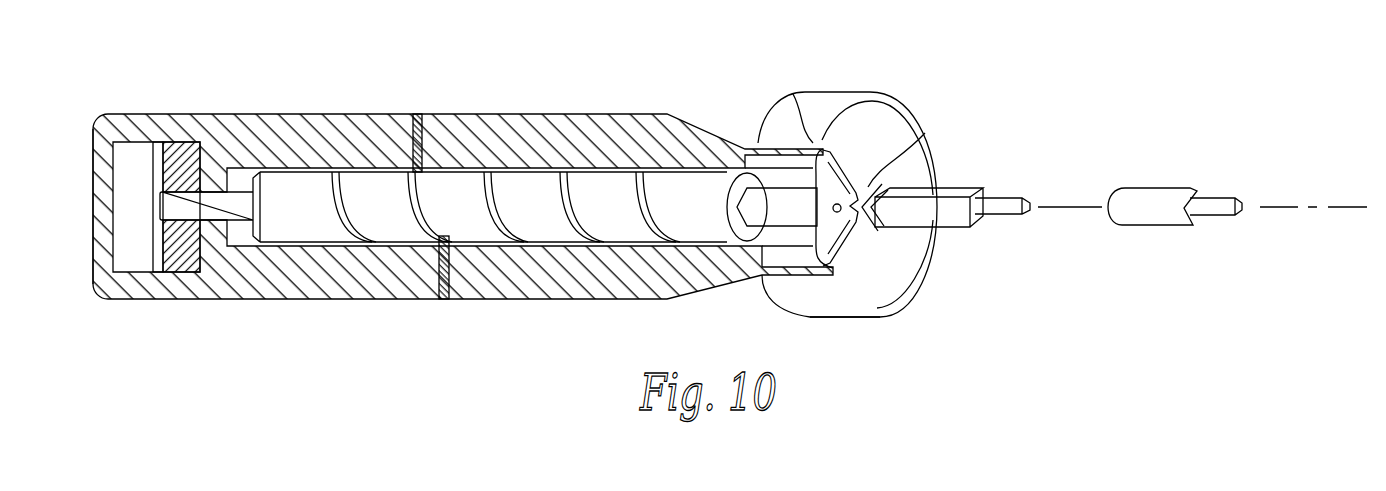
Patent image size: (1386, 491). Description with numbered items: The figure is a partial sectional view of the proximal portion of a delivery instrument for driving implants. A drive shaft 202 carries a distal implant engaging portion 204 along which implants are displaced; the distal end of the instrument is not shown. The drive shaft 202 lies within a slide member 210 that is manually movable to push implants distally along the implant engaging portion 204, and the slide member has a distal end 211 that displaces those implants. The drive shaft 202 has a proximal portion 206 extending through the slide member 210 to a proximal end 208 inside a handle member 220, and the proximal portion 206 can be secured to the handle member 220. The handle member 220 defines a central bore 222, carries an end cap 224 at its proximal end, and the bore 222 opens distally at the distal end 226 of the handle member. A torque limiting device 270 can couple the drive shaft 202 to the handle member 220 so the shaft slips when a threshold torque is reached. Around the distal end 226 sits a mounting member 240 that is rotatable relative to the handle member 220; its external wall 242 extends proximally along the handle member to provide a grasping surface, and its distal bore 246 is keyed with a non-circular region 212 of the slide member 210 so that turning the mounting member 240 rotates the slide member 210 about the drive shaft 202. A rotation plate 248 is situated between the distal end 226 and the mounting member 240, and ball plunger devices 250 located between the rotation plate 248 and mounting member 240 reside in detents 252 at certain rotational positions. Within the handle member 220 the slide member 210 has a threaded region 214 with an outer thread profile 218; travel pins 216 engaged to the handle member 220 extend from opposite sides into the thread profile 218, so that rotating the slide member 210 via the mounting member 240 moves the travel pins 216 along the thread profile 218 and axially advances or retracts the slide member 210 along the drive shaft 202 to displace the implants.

The handle member 220 is at (327, 108).
The end cap 224 is at (93, 185).
The torque limiting device 270 is at (180, 268).
The proximal end 208 is at (178, 196).
The proximal portion 206 is at (235, 220).
The central bore 222 is at (240, 171).
The outer thread profile 218 is at (562, 209).
The threaded region 214 is at (522, 190).
The travel pins 216 is at (438, 113).
The distal end 226 is at (788, 260).
The rotation plate 248 is at (826, 178).
The detents 252 is at (828, 275).
The ball plunger devices 250 is at (860, 257).
The external wall 242 is at (822, 100).
The mounting member 240 is at (895, 108).
The distal bore 246 is at (943, 182).
The non-circular region 212 is at (910, 220).
The slide member 210 is at (947, 175).
The drive shaft 202 is at (998, 227).
The distal end 211 is at (1200, 188).
The implant engaging portion 204 is at (1225, 197).